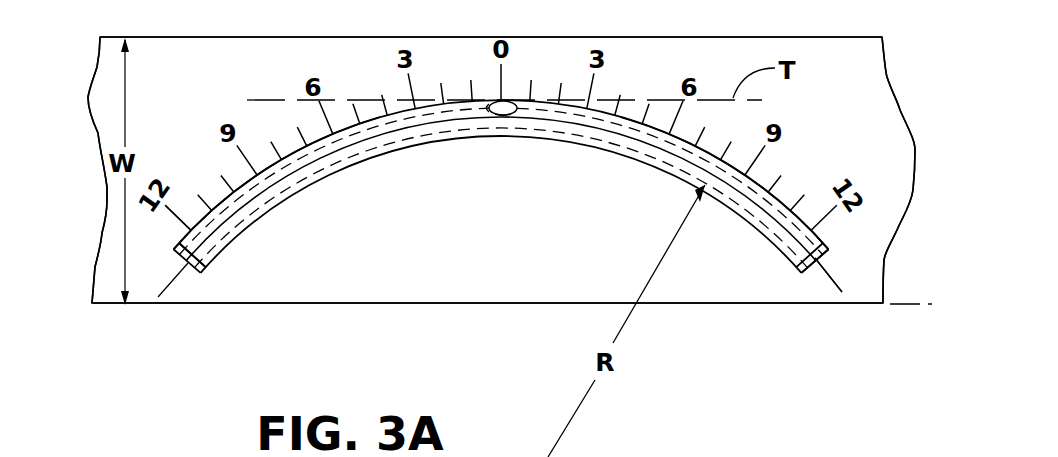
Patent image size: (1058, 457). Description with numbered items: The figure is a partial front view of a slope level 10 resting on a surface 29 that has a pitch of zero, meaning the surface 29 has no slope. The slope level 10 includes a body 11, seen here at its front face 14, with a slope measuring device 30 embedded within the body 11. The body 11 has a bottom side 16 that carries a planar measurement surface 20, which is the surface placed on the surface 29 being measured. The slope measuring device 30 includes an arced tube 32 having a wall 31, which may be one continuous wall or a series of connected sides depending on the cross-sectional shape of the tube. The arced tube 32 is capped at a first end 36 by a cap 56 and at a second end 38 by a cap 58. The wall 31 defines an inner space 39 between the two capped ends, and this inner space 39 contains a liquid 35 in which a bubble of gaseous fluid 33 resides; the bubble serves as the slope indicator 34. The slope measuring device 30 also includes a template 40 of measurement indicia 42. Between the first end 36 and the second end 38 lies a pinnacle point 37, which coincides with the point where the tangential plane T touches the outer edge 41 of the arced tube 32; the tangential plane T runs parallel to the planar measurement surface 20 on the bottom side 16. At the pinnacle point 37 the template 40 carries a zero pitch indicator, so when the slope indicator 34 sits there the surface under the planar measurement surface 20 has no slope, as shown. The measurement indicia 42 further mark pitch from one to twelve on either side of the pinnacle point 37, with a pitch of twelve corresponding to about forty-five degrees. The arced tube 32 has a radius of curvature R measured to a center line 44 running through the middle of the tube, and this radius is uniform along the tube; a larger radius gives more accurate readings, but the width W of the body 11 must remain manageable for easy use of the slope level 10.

The slope level 10 is at (540, 310).
The body 11 is at (730, 55).
The front face 14 is at (100, 80).
The bottom side 16 is at (652, 305).
The planar measurement surface 20 is at (270, 303).
The surface 29 is at (921, 306).
The slope measuring device 30 is at (237, 235).
The wall 31 is at (625, 118).
The arced tube 32 is at (713, 147).
The bubble of gaseous fluid 33 is at (486, 104).
The slope indicator 34 is at (503, 116).
The liquid 35 is at (308, 173).
The first end 36 is at (192, 272).
The pinnacle point 37 is at (505, 100).
The second end 38 is at (832, 262).
The inner space 39 is at (557, 128).
The template 40 is at (172, 222).
The outer edge 41 is at (243, 177).
The measurement indicia 42 is at (328, 117).
The center line 44 is at (833, 290).
The cap 56 is at (195, 272).
The cap 58 is at (815, 276).